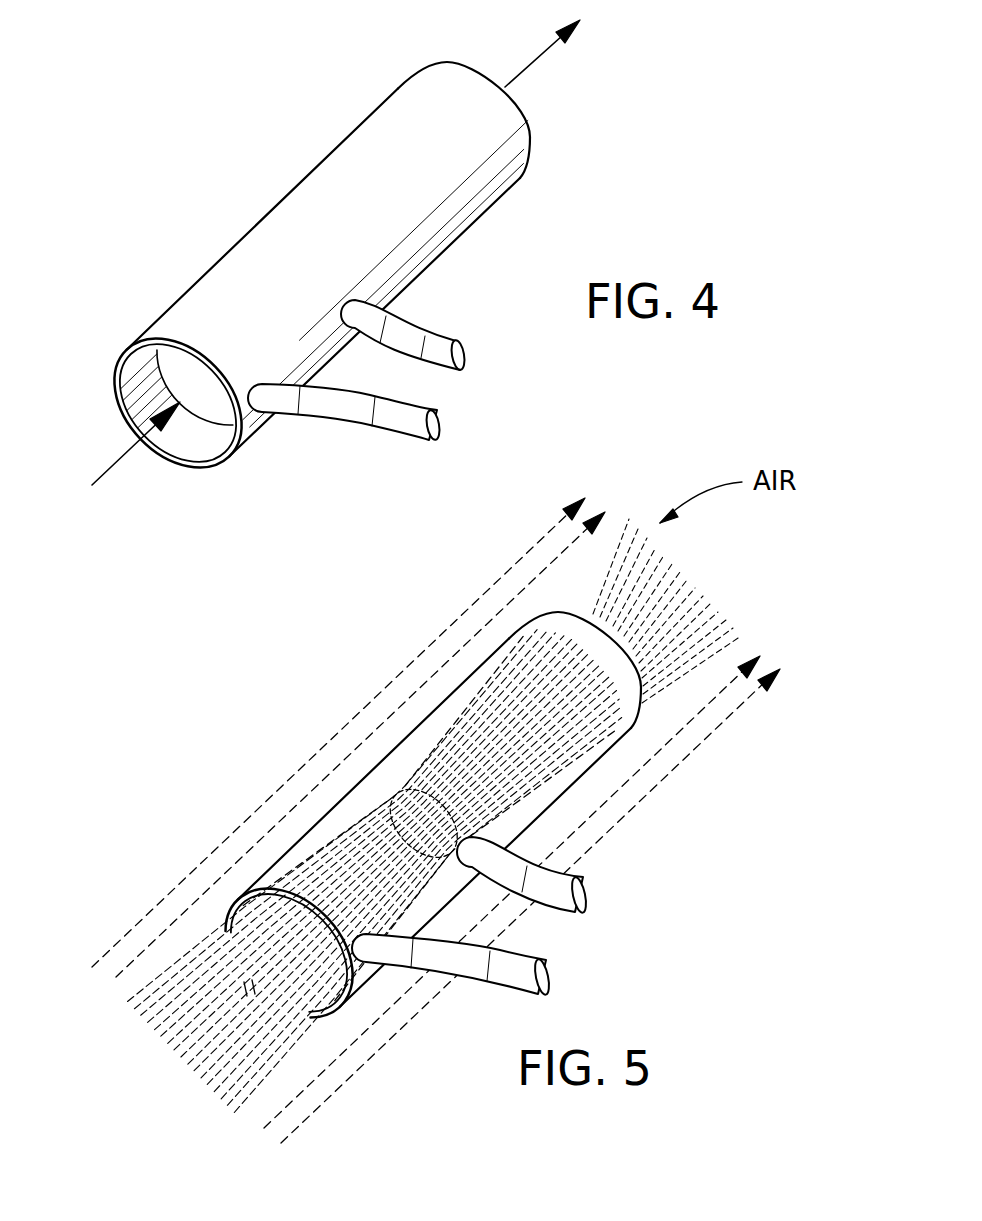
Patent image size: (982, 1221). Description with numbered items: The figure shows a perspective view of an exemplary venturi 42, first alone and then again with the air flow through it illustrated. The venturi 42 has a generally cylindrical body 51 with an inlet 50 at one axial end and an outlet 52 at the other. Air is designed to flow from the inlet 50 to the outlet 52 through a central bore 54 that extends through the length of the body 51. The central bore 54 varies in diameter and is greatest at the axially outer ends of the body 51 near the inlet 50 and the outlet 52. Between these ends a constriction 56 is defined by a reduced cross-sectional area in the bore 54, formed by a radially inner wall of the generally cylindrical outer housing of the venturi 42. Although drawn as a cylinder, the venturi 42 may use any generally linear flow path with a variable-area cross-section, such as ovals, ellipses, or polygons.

In FIG. 4, the venturi 42 is at (369, 301).
In FIG. 5, the venturi 42 is at (407, 815).
In FIG. 4, the inlet 50 is at (162, 465).
In FIG. 5, the inlet 50 is at (213, 925).
In FIG. 4, the generally cylindrical body 51 is at (227, 255).
In FIG. 5, the generally cylindrical body 51 is at (478, 676).
In FIG. 4, the outlet 52 is at (537, 107).
In FIG. 5, the outlet 52 is at (553, 612).
In FIG. 4, the central bore 54 is at (203, 443).
In FIG. 5, the central bore 54 is at (330, 992).
In FIG. 5, the constriction 56 is at (402, 785).